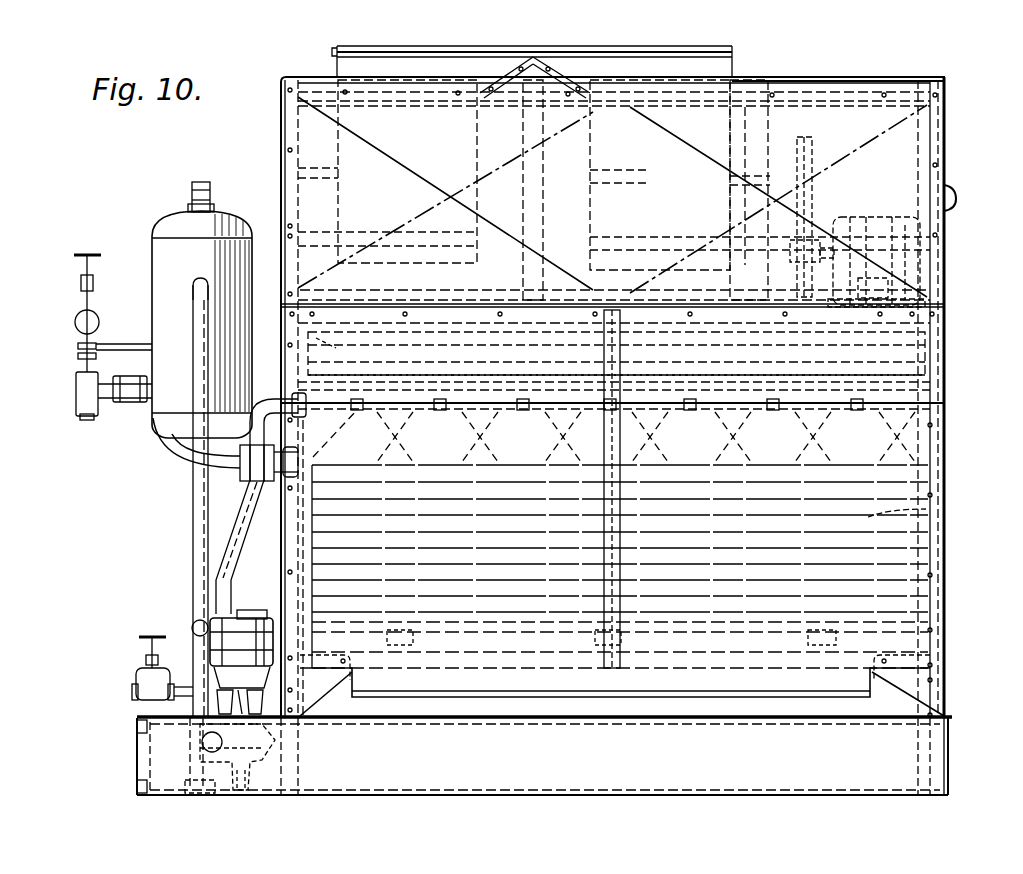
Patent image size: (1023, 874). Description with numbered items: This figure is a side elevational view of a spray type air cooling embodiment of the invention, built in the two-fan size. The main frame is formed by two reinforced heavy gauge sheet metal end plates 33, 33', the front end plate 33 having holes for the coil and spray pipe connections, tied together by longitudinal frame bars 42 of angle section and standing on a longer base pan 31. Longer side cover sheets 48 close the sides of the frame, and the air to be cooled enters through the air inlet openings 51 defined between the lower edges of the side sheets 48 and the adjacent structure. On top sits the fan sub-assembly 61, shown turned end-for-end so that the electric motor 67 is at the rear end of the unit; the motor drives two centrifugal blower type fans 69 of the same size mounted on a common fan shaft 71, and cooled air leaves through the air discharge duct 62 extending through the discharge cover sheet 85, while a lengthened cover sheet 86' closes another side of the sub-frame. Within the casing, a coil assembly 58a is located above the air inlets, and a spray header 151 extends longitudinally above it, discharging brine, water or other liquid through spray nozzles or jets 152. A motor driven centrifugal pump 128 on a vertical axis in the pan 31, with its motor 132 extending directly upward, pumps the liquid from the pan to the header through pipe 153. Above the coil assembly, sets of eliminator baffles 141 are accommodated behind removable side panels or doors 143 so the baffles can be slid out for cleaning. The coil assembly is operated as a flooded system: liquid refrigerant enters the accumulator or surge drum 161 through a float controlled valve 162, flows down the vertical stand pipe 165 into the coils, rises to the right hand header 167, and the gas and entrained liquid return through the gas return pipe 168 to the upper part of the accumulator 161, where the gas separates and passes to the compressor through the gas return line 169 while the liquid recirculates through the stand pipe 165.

The fan sub-assembly 61 is at (275, 128).
The air discharge duct 62 is at (372, 48).
The fans 69 is at (343, 114).
The cover sheet 86' is at (581, 190).
The fan shaft 71 is at (752, 178).
The electric motor 67 is at (880, 220).
The discharge cover sheet 85 is at (878, 82).
The removable side panels or doors 143 is at (900, 362).
The eliminator baffles 141 is at (280, 338).
The spray nozzles or jets 152 is at (355, 410).
The side cover sheets 48 is at (880, 452).
The coil assembly 58a is at (928, 511).
The rear end plate 33' is at (963, 399).
The front end plate 33 is at (268, 569).
The longitudinal frame bars 42 is at (538, 660).
The air inlet openings 51 is at (420, 710).
The pan 31 is at (162, 755).
The centrifugal pump 128 is at (278, 744).
The motor 132 is at (232, 645).
The vertical stand pipe 165 is at (196, 523).
The accumulator or surge drum 161 is at (167, 261).
The gas return line 169 is at (195, 185).
The float controlled valve 162 is at (78, 401).
The gas return pipe 168 is at (204, 408).
The spray header 151 is at (268, 374).
The pipe 153 is at (224, 556).
The right hand header 167 is at (300, 543).